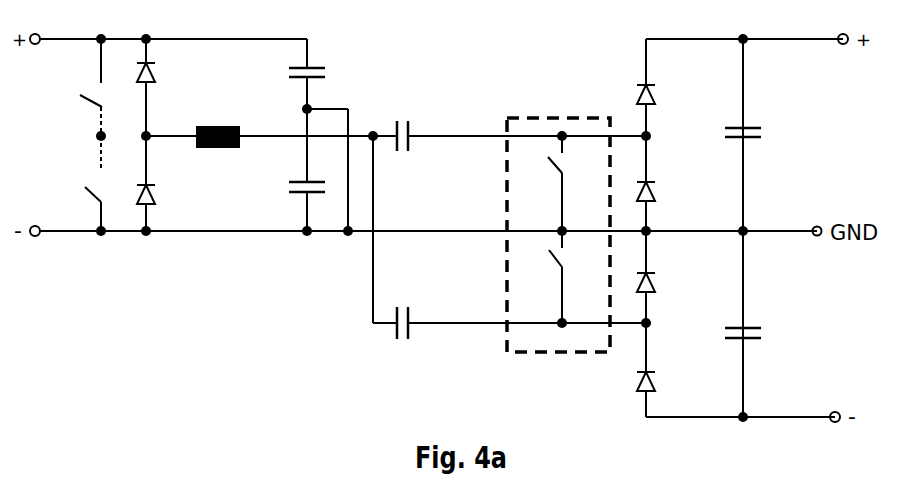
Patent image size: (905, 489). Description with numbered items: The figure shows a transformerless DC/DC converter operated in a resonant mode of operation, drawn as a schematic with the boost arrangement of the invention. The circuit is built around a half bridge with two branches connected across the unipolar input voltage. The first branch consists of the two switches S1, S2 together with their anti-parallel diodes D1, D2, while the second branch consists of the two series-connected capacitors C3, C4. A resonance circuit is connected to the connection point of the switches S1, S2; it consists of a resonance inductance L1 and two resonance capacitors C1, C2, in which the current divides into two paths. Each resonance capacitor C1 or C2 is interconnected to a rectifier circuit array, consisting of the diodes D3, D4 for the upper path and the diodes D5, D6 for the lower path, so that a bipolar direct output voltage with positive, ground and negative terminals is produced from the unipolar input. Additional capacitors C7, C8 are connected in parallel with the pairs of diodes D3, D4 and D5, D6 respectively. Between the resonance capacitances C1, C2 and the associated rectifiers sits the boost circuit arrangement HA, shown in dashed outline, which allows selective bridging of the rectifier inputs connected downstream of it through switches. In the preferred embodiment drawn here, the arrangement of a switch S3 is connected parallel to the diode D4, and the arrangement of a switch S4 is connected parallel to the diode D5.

The switch S1 is at (82, 87).
The switch S2 is at (79, 183).
The anti-parallel diode D1 is at (166, 87).
The anti-parallel diode D2 is at (166, 183).
The resonance inductance L1 is at (218, 122).
The capacitor C3 is at (322, 73).
The capacitor C4 is at (289, 189).
The resonance capacitor C1 is at (421, 127).
The resonance capacitor C2 is at (417, 313).
The switch S3 is at (541, 183).
The switch S4 is at (541, 277).
The boost circuit arrangement HA is at (558, 215).
The rectifier diode D3 is at (665, 98).
The rectifier diode D4 is at (664, 196).
The rectifier diode D5 is at (665, 286).
The rectifier diode D6 is at (665, 385).
The additional capacitor C7 is at (763, 145).
The additional capacitor C8 is at (764, 346).